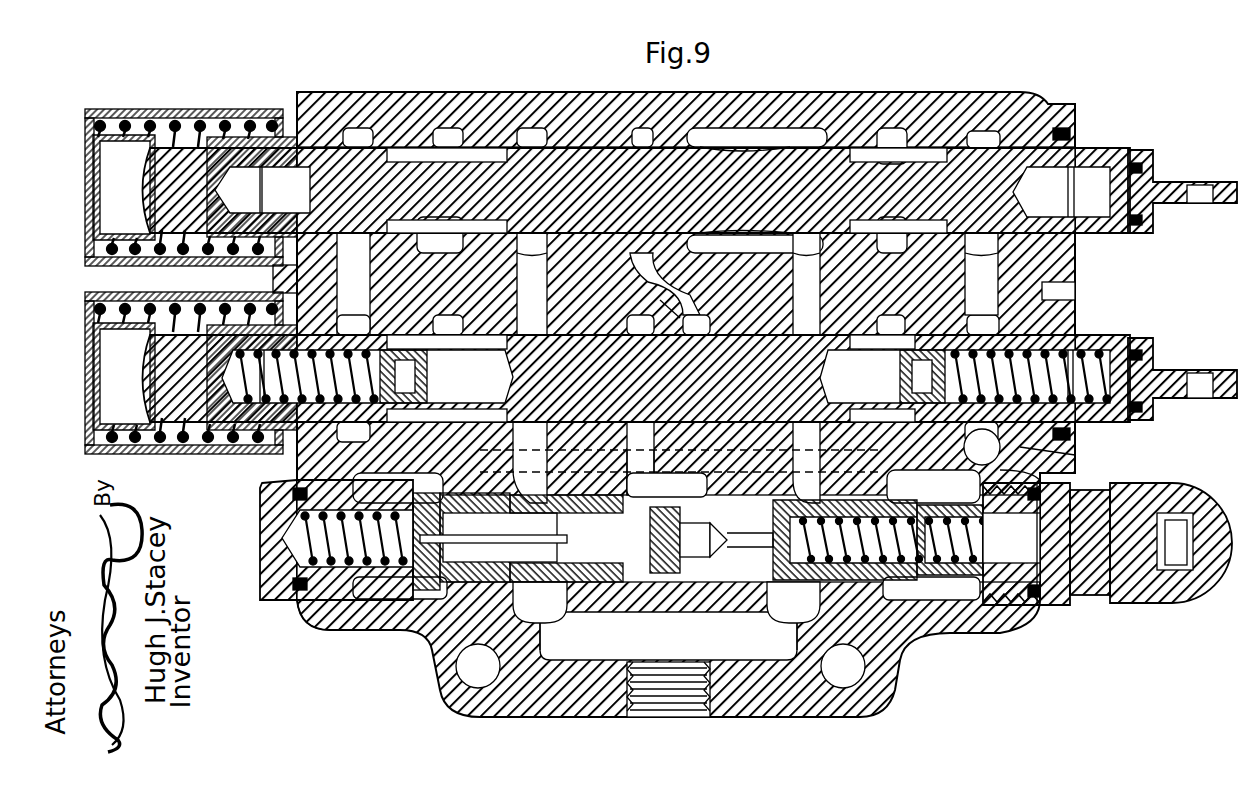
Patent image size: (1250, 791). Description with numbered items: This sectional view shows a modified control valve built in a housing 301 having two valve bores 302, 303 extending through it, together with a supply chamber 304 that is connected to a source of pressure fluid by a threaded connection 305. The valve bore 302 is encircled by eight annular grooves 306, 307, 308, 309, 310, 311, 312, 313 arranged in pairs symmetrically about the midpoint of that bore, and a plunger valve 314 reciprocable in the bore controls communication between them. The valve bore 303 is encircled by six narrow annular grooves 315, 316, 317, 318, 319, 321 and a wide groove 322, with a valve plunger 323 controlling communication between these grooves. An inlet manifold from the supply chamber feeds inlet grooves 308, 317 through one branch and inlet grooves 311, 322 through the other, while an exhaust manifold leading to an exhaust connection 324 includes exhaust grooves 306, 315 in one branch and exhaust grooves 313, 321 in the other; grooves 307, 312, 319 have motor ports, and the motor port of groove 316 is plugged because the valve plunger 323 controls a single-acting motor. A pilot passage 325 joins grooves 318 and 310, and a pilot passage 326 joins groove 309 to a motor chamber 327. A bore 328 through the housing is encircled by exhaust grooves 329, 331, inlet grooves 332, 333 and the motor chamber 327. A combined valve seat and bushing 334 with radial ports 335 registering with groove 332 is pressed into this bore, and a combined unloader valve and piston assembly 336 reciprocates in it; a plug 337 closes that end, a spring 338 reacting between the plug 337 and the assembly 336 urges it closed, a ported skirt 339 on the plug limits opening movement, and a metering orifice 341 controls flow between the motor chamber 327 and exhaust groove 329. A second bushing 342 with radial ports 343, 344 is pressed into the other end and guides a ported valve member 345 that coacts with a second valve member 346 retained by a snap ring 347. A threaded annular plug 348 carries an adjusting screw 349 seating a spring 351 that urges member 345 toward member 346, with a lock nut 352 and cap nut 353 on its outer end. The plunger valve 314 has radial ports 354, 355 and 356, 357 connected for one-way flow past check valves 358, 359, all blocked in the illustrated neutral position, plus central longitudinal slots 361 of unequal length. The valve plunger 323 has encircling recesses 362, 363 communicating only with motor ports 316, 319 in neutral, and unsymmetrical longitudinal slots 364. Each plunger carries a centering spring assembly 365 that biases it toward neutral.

The housing 301 is at (805, 92).
The valve bore 302 is at (1065, 452).
The valve bore 303 is at (410, 128).
The supply chamber 304 is at (668, 636).
The threaded connection 305 is at (672, 716).
The annular groove 306 is at (353, 325).
The annular groove 307 is at (448, 325).
The annular groove 308 is at (532, 284).
The annular groove 309 is at (640, 325).
The annular groove 310 is at (696, 325).
The annular groove 311 is at (807, 284).
The annular groove 312 is at (891, 325).
The annular groove 313 is at (983, 325).
The plunger valve 314 is at (1105, 337).
The annular groove 315 is at (358, 137).
The annular groove 316 is at (448, 137).
The annular groove 317 is at (532, 137).
The annular groove 318 is at (645, 128).
The annular groove 319 is at (892, 146).
The annular groove 321 is at (983, 140).
The wide groove 322 is at (757, 138).
The valve plunger 323 is at (1097, 150).
The exhaust connection 324 is at (1045, 478).
The pilot passage 325 is at (665, 284).
The pilot passage 326 is at (640, 472).
The motor chamber 327 is at (722, 612).
The bore 328 is at (588, 612).
The groove 329 is at (365, 602).
The groove 331 is at (933, 486).
The groove 332 is at (530, 462).
The groove 333 is at (807, 462).
The combined valve seat and bushing 334 is at (540, 602).
The radial ports 335 is at (566, 538).
The combined unloader valve and piston assembly 336 is at (511, 541).
The plug 337 is at (262, 522).
The spring 338 is at (300, 552).
The ported skirt 339 is at (388, 585).
The metering orifice 341 is at (408, 508).
The second bushing 342 is at (915, 596).
The radial ports 343 is at (696, 503).
The radial ports 344 is at (795, 582).
The ported valve member 345 is at (905, 570).
The second valve member 346 is at (726, 544).
The snap ring 347 is at (660, 560).
The annular plug 348 is at (1040, 610).
The adjusting screw 349 is at (960, 513).
The spring 351 is at (946, 531).
The lock nut 352 is at (1090, 598).
The cap nut 353 is at (1155, 605).
The radial port 354 is at (372, 340).
The radial port 355 is at (367, 376).
The radial port 356 is at (981, 337).
The radial port 357 is at (965, 376).
The check valve 358 is at (420, 396).
The check valve 359 is at (885, 392).
The longitudinal slots 361 is at (663, 391).
The encircling recess 362 is at (440, 235).
The encircling recess 363 is at (892, 235).
The longitudinal slots 364 is at (700, 145).
The centering spring assembly 365 is at (204, 110).